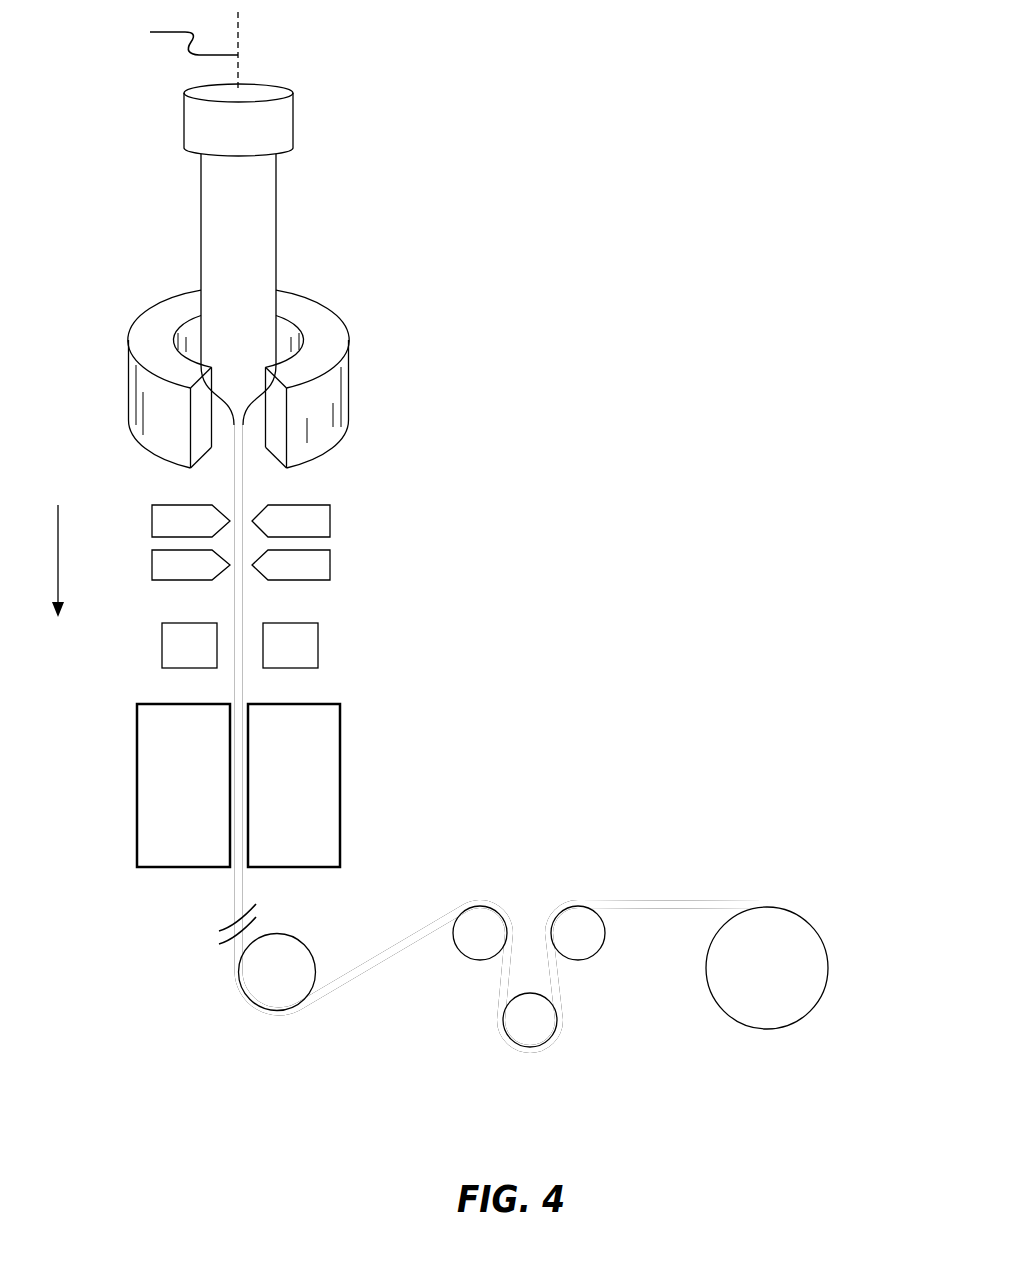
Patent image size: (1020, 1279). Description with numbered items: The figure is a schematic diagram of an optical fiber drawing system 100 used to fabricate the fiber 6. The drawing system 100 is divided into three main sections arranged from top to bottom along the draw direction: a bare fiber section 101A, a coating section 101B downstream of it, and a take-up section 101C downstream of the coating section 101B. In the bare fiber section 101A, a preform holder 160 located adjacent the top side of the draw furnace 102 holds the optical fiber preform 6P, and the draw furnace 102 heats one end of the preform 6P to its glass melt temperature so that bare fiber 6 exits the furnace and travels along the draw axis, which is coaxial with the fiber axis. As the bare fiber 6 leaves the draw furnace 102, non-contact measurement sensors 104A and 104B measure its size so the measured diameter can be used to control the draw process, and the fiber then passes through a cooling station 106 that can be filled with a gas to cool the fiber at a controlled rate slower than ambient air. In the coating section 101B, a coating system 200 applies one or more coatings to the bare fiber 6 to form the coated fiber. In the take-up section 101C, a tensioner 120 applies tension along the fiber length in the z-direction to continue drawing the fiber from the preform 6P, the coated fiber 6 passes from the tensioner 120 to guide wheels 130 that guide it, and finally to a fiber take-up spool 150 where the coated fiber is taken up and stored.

The optical fiber drawing system 100 is at (586, 78).
The preform holder 160 is at (295, 123).
The optical fiber preform 6P is at (284, 201).
The draw furnace 102 is at (338, 398).
The fiber 6 is at (244, 483).
The non-contact measurement sensor 104A is at (147, 505).
The non-contact measurement sensor 104B is at (147, 550).
The cooling station 106 is at (318, 645).
The bare fiber section 101A is at (470, 61).
The coating section 101B is at (118, 697).
The take-up section 101C is at (880, 887).
The coating system 200 is at (340, 750).
The tensioner 120 is at (292, 951).
The guide wheels 130 is at (478, 938).
The fiber take-up spool 150 is at (802, 943).